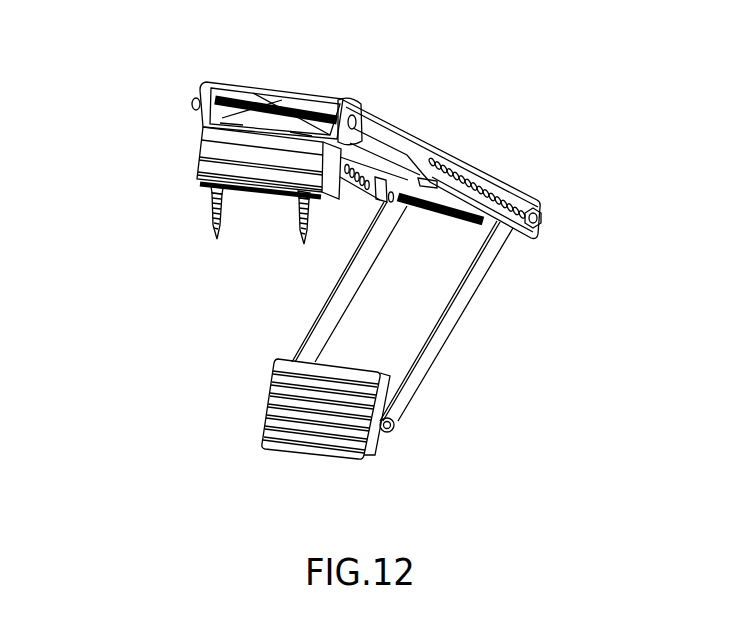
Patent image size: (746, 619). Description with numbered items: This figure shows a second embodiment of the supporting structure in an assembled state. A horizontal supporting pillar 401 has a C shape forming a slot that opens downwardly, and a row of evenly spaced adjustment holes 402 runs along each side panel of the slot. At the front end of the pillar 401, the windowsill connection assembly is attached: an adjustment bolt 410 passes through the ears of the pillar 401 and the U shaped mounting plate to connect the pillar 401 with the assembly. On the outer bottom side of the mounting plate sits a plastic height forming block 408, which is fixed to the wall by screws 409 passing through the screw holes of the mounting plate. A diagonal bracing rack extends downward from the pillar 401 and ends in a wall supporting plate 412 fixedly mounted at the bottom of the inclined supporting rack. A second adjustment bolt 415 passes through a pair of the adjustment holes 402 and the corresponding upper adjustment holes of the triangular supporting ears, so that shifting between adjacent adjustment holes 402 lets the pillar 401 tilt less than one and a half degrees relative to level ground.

The horizontal supporting pillar 401 is at (423, 133).
The adjustment holes 402 is at (527, 188).
The height forming block 408 is at (200, 135).
The screws 409 is at (202, 210).
The adjustment bolt 410 is at (372, 101).
The wall supporting plate 412 is at (383, 450).
The second adjustment bolt 415 is at (549, 222).